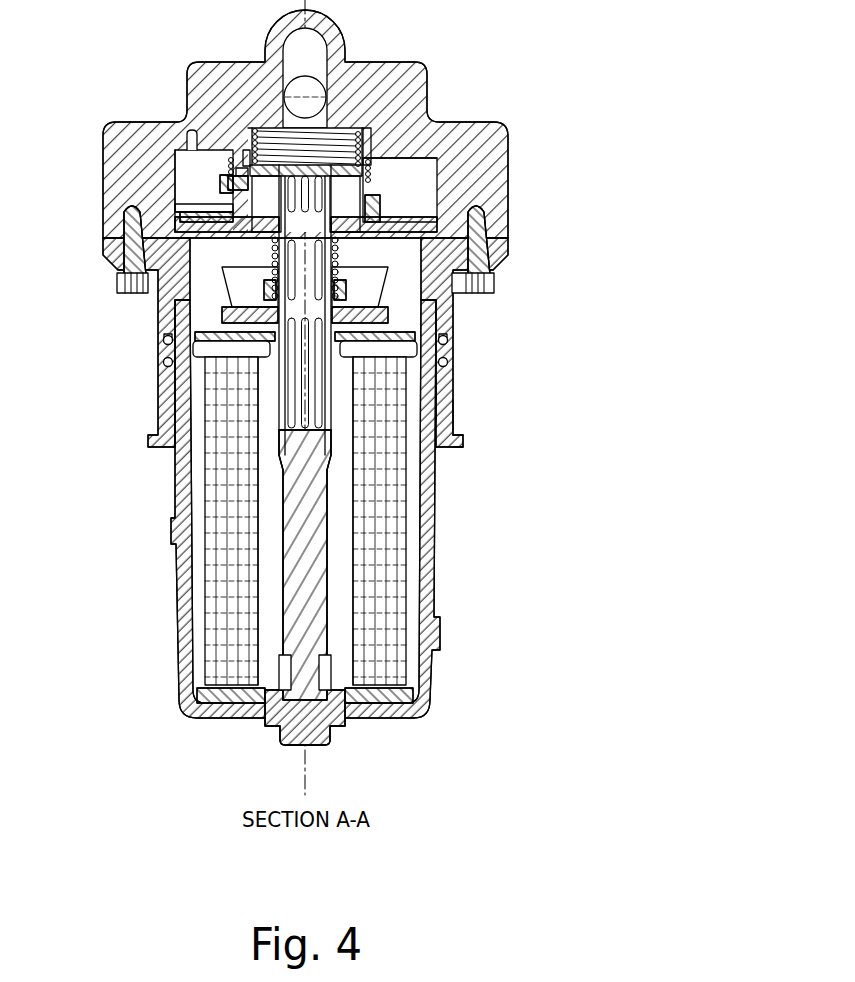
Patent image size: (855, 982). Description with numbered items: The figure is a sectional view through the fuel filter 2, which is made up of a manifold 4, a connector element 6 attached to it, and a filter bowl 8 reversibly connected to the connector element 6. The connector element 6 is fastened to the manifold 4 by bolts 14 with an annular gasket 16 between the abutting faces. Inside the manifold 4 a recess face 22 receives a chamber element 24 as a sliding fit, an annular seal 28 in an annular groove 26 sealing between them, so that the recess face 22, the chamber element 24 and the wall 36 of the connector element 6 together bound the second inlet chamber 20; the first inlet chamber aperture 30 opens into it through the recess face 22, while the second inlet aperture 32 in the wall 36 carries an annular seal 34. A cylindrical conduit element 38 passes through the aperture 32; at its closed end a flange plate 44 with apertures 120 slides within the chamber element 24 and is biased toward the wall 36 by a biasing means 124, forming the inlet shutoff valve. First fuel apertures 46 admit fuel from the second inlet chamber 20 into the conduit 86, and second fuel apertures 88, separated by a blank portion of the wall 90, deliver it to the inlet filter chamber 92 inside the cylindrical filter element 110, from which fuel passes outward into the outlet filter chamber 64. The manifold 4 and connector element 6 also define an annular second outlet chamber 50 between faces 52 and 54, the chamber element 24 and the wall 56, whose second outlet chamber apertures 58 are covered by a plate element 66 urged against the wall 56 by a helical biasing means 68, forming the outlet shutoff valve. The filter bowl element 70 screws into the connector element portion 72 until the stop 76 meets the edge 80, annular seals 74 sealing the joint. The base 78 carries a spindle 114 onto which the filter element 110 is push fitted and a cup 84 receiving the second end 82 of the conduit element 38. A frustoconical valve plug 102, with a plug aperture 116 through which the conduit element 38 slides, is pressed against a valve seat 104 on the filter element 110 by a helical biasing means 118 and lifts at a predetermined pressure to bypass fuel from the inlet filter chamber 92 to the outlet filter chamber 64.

The fuel filter 2 is at (512, 472).
The manifold 4 is at (450, 80).
The connector element 6 is at (522, 253).
The filter bowl 8 is at (452, 572).
The bolts 14 is at (496, 285).
The annular gasket 16 is at (488, 238).
The second inlet chamber 20 is at (360, 163).
The recess face 22 is at (248, 150).
The chamber element 24 is at (385, 175).
The annular groove 26 is at (256, 172).
The annular seal 28 is at (372, 172).
The first inlet chamber aperture 30 is at (335, 148).
The second inlet aperture 32 is at (190, 226).
The annular seal 34 is at (280, 218).
The wall 36 is at (262, 212).
The conduit element 38 is at (343, 493).
The flange plate 44 is at (250, 165).
The first fuel apertures 46 is at (285, 202).
The second outlet chamber 50 is at (183, 198).
The face 52 is at (227, 177).
The face 54 is at (182, 198).
The wall 56 is at (130, 278).
The second outlet chamber apertures 58 is at (440, 205).
The outlet filter chamber 64 is at (192, 258).
The plate element 66 is at (375, 212).
The biasing means 68 is at (388, 165).
The filter bowl element 70 is at (438, 400).
The connector element portion 72 is at (454, 412).
The annular seals 74 is at (182, 358).
The stop 76 is at (463, 442).
The filter bowl base 78 is at (227, 718).
The edge 80 is at (455, 433).
The second end 82 is at (298, 690).
The cup 84 is at (340, 670).
The conduit 86 is at (292, 273).
The second fuel apertures 88 is at (287, 415).
The blank portion of the wall 90 is at (166, 341).
The inlet filter chamber 92 is at (252, 573).
The valve plug 102 is at (388, 278).
The valve seat 104 is at (400, 314).
The filter element 110 is at (388, 625).
The spindle 114 is at (340, 690).
The plug aperture 116 is at (392, 336).
The biasing means 118 is at (341, 262).
The apertures 120 is at (190, 152).
The biasing means 124 is at (405, 120).